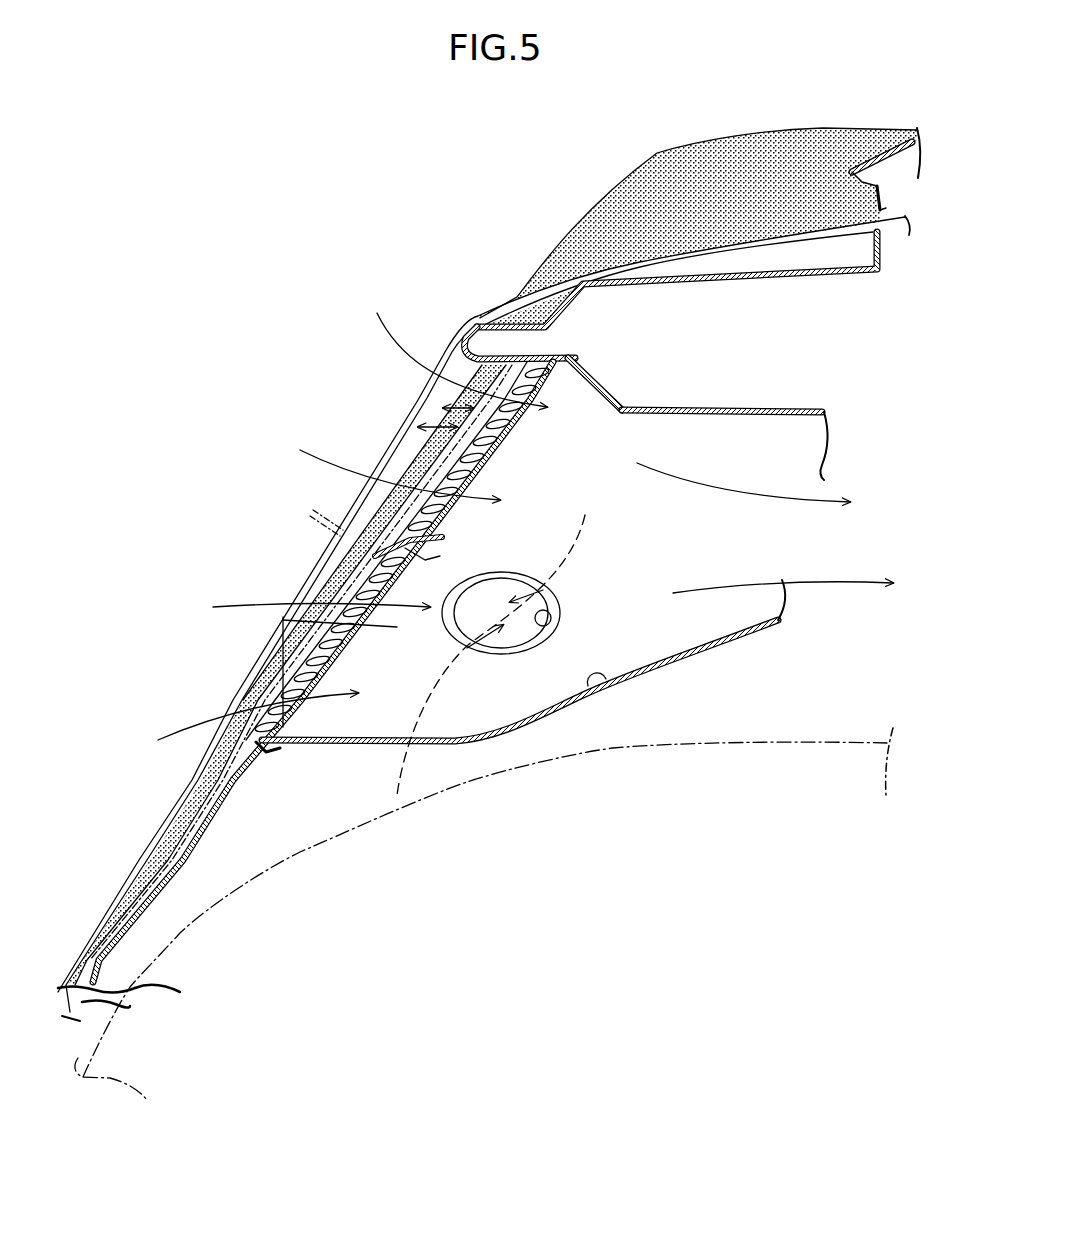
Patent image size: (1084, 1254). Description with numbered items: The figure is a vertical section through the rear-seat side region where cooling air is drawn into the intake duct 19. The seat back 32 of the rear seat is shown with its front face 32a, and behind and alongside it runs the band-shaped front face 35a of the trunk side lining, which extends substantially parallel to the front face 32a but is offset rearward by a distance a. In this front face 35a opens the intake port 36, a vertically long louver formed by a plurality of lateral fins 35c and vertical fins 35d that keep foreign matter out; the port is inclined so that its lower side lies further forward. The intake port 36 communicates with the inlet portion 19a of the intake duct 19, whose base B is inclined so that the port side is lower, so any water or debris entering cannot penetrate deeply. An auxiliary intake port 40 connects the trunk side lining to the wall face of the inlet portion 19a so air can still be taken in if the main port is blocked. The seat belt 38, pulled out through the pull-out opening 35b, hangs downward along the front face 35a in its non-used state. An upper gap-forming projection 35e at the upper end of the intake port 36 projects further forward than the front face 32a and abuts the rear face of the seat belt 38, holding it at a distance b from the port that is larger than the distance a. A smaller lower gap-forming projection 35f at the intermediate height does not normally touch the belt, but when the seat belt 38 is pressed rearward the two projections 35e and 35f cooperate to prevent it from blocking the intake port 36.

The seat back 32 is at (657, 153).
The seat belt 38 is at (540, 300).
The pull-out opening 35b is at (877, 207).
The upper gap-forming projection 35e is at (480, 320).
The inlet portion 19a is at (677, 407).
The intake duct 19 is at (770, 408).
The front face of the seat back 32a is at (343, 563).
The intake port 36 is at (427, 467).
The front face of the trunk side lining 35a is at (343, 597).
The base of the inlet portion B is at (589, 702).
The lateral fins 35c is at (487, 463).
The lower gap-forming projection 35f is at (400, 537).
The vertical fins 35d is at (415, 583).
The auxiliary intake port 40 is at (545, 630).
The distance a is at (457, 405).
The distance b is at (447, 427).